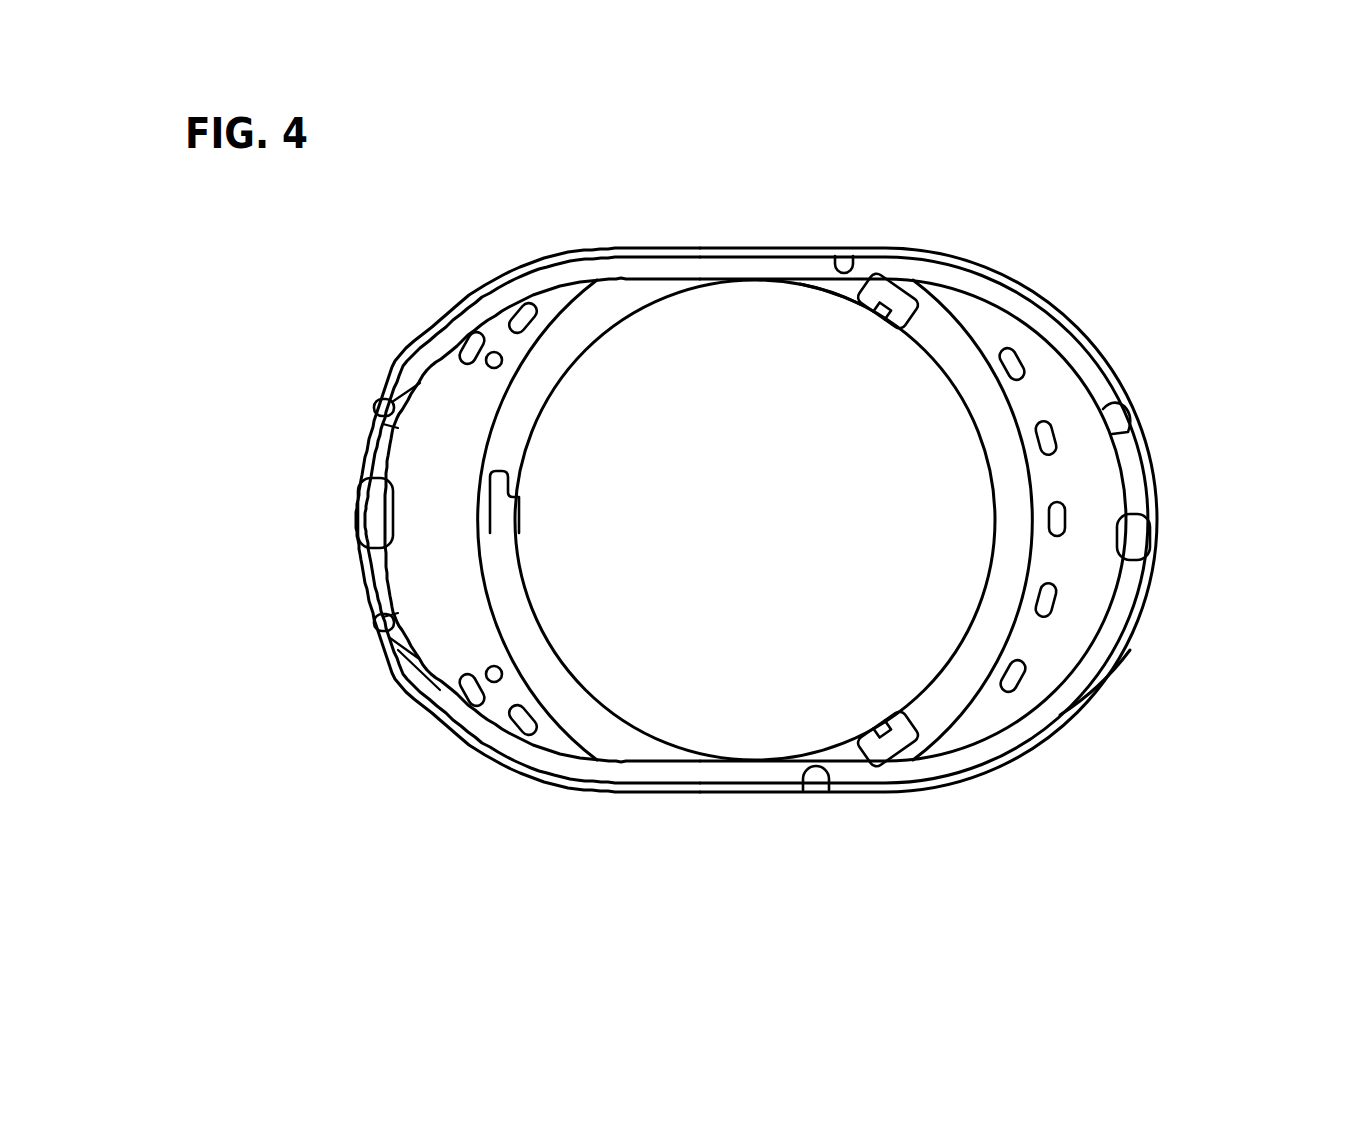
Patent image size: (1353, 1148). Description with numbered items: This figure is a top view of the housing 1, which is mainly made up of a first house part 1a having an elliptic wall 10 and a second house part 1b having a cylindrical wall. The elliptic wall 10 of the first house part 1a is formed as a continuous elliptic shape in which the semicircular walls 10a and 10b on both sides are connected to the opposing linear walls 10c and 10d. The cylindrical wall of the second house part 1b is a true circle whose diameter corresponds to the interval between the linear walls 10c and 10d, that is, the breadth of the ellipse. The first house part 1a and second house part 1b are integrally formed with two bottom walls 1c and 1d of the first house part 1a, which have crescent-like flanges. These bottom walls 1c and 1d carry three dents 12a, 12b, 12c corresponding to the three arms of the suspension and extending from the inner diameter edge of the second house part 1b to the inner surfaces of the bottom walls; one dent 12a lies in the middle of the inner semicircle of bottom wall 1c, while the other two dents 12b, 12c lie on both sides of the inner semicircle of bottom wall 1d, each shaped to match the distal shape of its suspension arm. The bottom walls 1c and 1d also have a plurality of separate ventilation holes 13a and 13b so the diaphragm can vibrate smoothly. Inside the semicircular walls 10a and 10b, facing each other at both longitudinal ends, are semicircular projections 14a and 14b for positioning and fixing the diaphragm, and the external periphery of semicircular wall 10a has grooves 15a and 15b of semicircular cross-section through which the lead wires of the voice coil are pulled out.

The housing 1 is at (780, 541).
The first house part 1a is at (1082, 719).
The second house part 1b is at (821, 303).
The bottom wall 1c is at (552, 740).
The bottom wall 1d is at (993, 718).
The elliptic wall 10 is at (653, 247).
The semicircular wall 10a is at (408, 662).
The semicircular wall 10b is at (1133, 430).
The linear wall 10c is at (829, 790).
The linear wall 10d is at (836, 258).
The dent 12a is at (500, 511).
The dent 12b is at (883, 740).
The dent 12c is at (891, 300).
The ventilation holes 13a is at (496, 683).
The ventilation holes 13b is at (1056, 528).
The semicircular projection 14a is at (360, 482).
The semicircular projection 14b is at (1150, 560).
The groove 15a is at (373, 408).
The groove 15b is at (373, 628).